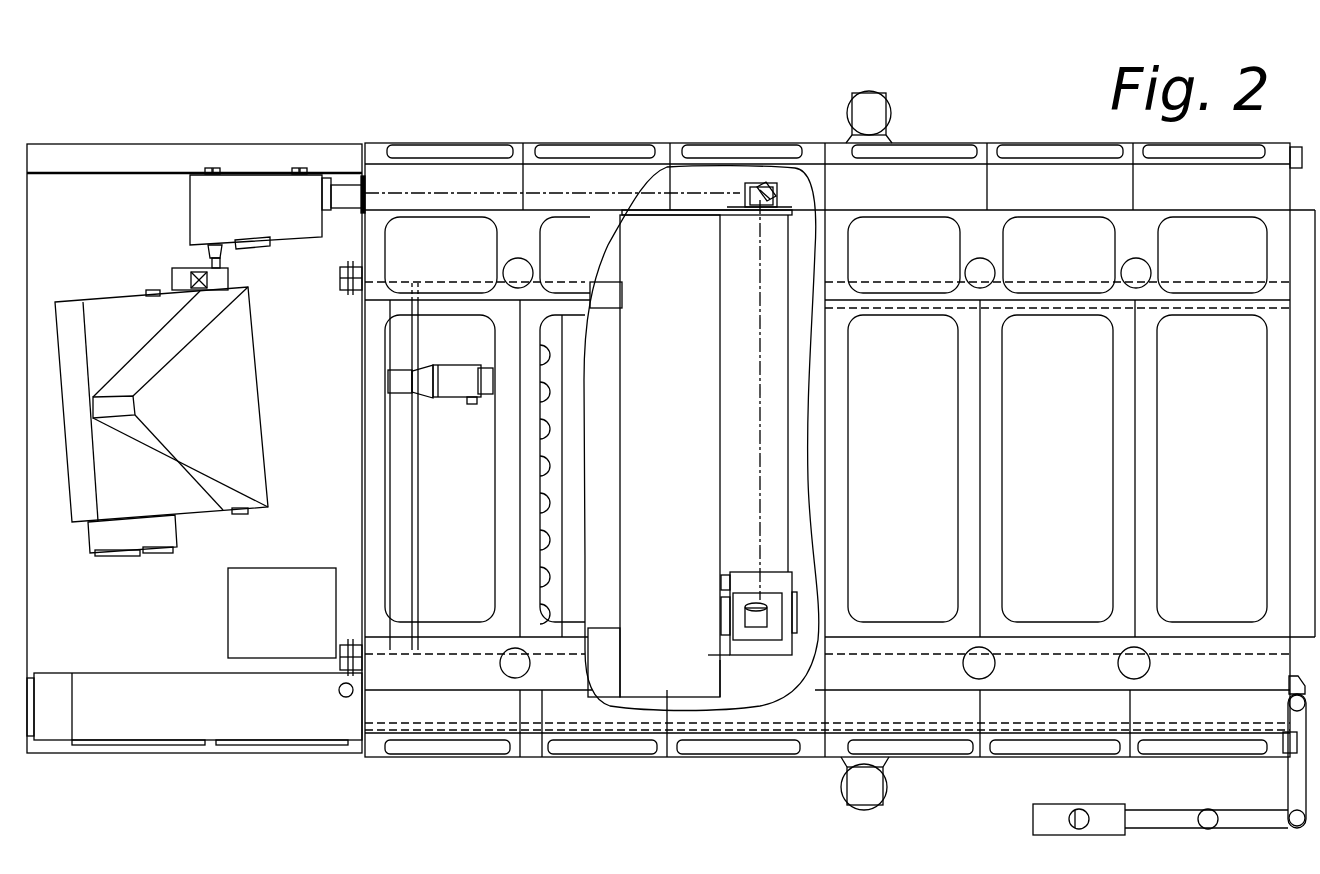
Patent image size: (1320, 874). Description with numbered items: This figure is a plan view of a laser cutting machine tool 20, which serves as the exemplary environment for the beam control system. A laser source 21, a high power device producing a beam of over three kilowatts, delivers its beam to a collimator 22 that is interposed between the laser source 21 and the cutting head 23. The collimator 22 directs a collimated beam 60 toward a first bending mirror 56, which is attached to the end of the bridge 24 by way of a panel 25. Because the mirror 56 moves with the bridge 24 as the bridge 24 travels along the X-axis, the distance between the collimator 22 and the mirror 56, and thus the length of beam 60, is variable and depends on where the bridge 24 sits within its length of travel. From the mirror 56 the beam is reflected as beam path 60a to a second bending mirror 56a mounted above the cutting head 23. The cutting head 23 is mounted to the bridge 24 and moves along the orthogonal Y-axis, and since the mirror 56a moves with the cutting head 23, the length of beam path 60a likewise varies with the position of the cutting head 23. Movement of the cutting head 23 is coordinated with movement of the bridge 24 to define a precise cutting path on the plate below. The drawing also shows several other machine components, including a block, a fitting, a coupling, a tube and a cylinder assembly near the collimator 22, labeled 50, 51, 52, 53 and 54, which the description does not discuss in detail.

The laser cutting machine tool 20 is at (946, 108).
The laser source 21 is at (118, 302).
The collimator 22 is at (246, 218).
The cutting head 23 is at (722, 676).
The bridge 24 is at (666, 348).
The panel 25 is at (745, 205).
The mounting block 50 is at (228, 283).
The fitting 51 is at (205, 255).
The coupling neck 52 is at (330, 192).
The connecting tube 53 is at (343, 192).
The pneumatic cylinder 54 is at (365, 200).
The first bending mirror 56 is at (768, 207).
The second bending mirror 56a is at (752, 606).
The collimated beam 60 is at (562, 197).
The beam path 60a is at (760, 372).